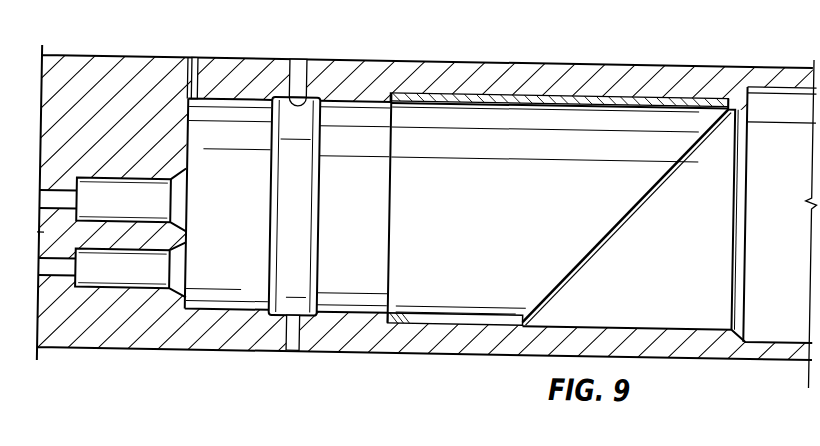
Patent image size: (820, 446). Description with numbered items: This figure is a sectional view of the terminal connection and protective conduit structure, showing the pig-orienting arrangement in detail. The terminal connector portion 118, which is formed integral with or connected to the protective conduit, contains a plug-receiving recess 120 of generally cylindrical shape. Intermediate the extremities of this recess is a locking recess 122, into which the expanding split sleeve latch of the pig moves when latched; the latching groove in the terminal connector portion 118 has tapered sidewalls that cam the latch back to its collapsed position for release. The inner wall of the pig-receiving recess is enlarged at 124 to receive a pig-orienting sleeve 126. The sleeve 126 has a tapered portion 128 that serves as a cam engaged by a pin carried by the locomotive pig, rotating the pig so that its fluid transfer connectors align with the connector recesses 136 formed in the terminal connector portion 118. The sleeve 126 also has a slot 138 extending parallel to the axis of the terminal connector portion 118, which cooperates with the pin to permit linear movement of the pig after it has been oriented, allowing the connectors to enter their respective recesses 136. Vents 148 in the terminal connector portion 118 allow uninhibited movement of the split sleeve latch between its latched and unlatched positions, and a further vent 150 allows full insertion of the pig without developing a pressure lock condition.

The terminal connector portion 118 is at (538, 67).
The plug-receiving recess 120 is at (241, 92).
The locking recess 122 is at (313, 88).
The enlarged inner wall 124 is at (645, 315).
The pig-orienting sleeve 126 is at (640, 172).
The tapered portion 128 is at (613, 222).
The connector recesses 136 is at (100, 218).
The slot 138 is at (452, 311).
The vents 148 is at (301, 336).
The vent 150 is at (192, 54).